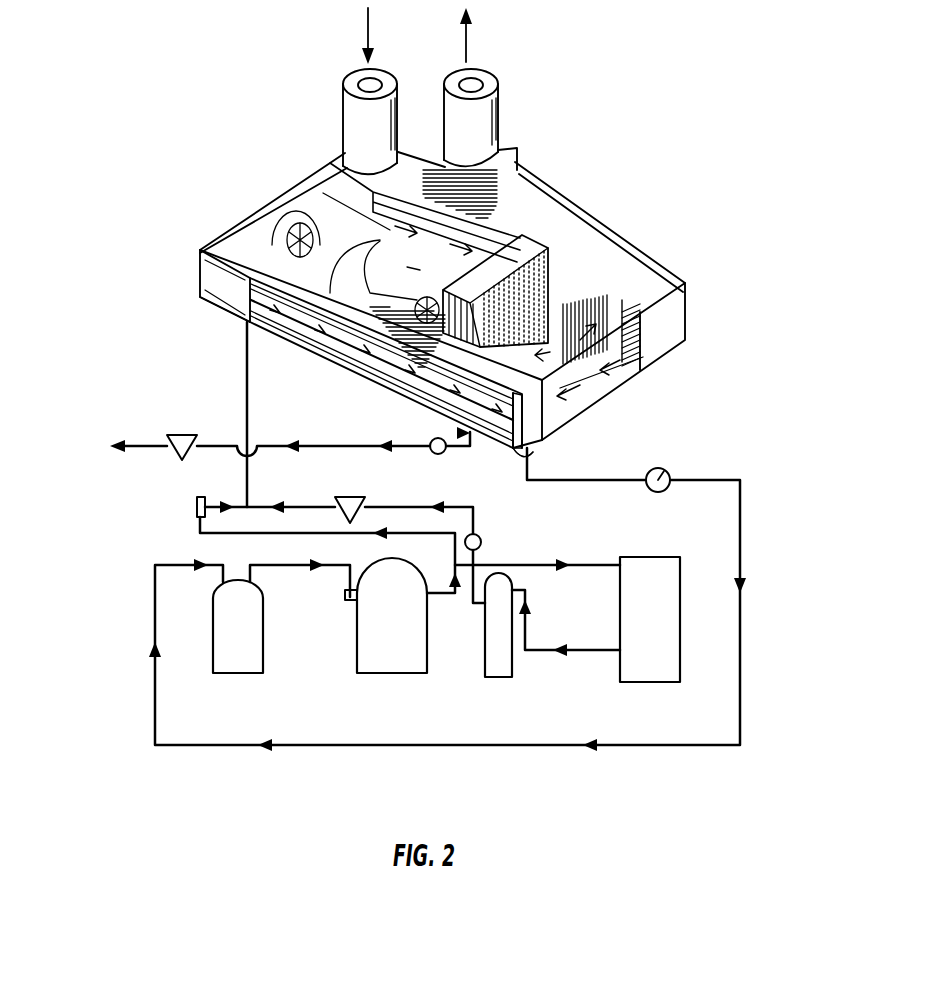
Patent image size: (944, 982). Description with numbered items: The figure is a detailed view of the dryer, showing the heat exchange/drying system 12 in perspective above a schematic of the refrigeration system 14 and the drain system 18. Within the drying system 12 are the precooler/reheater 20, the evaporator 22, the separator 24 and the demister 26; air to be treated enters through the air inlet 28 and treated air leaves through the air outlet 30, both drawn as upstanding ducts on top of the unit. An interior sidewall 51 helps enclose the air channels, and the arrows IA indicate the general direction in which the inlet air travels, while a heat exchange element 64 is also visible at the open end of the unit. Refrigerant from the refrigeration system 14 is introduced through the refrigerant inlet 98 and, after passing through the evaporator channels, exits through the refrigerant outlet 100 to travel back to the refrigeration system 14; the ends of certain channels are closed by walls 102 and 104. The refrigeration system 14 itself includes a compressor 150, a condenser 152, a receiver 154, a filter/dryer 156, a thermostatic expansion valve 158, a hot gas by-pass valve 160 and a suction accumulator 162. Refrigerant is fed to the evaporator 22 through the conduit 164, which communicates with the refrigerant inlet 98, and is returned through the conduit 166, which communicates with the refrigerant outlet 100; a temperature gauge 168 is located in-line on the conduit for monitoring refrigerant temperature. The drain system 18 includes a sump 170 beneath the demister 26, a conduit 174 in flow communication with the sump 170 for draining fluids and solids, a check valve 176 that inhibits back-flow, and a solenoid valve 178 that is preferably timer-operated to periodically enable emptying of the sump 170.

The heat exchange/drying system 12 is at (744, 227).
The refrigeration system 14 is at (804, 538).
The drain system 18 is at (113, 393).
The precooler/reheater 20 is at (495, 208).
The evaporator 22 is at (230, 247).
The separator 24 is at (314, 208).
The demister 26 is at (531, 246).
The air inlet 28 is at (383, 137).
The air outlet 30 is at (485, 137).
The interior sidewall 51 is at (380, 215).
The evaporator coil 64 is at (623, 357).
The inlet air direction arrows IA is at (583, 388).
The refrigerant inlet 98 is at (237, 332).
The refrigerant outlet 100 is at (533, 450).
The wall 102 is at (382, 382).
The wall 104 is at (517, 417).
The compressor 150 is at (386, 615).
The condenser 152 is at (668, 618).
The receiver 154 is at (498, 625).
The filter/dryer 156 is at (481, 545).
The thermostatic expansion valve 158 is at (352, 497).
The hot gas by-pass valve 160 is at (197, 505).
The suction accumulator 162 is at (256, 624).
The conduit 164 is at (249, 378).
The conduit 166 is at (742, 542).
The temperature gauge 168 is at (655, 468).
The sump 170 is at (458, 433).
The conduit 174 is at (137, 446).
The check valve 176 is at (440, 455).
The solenoid valve 178 is at (186, 435).